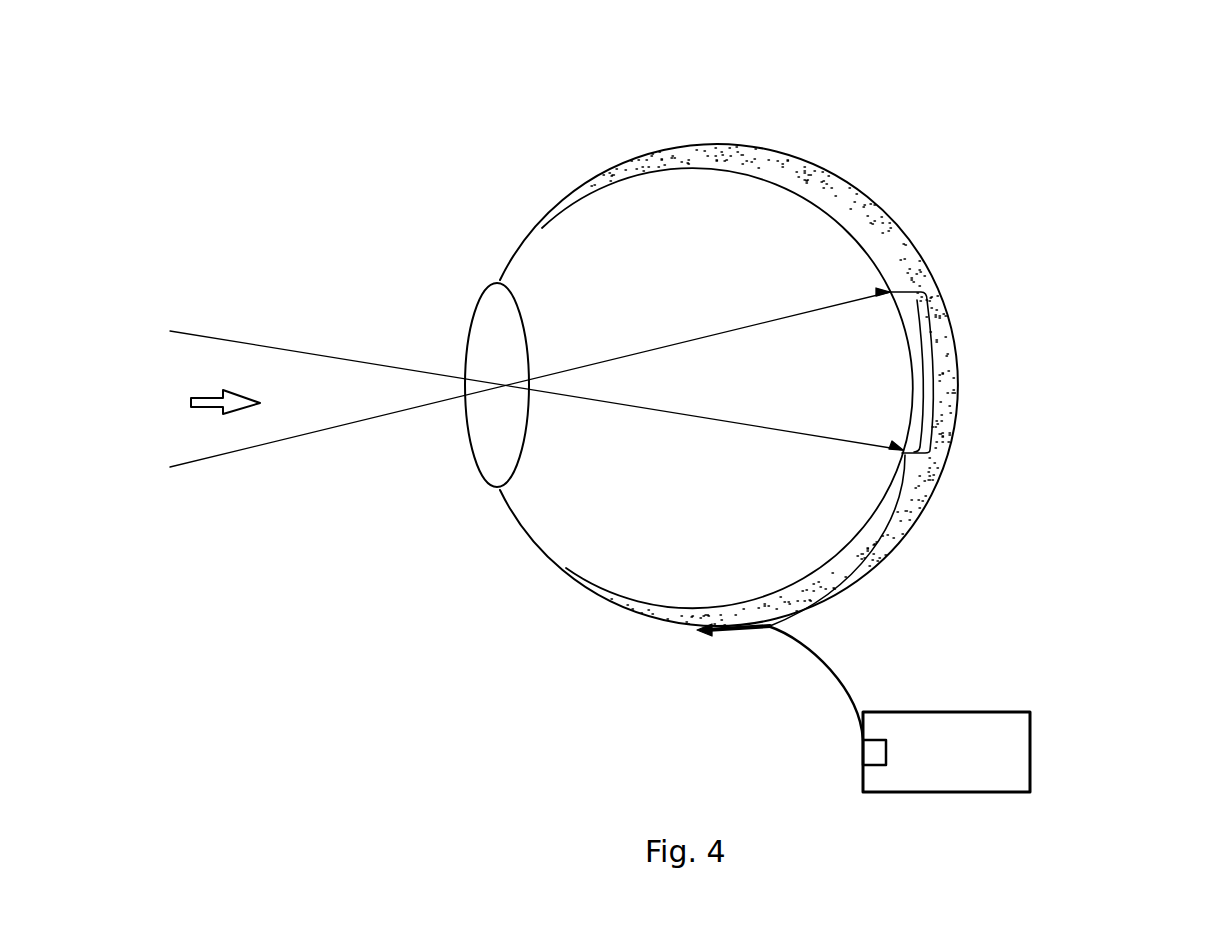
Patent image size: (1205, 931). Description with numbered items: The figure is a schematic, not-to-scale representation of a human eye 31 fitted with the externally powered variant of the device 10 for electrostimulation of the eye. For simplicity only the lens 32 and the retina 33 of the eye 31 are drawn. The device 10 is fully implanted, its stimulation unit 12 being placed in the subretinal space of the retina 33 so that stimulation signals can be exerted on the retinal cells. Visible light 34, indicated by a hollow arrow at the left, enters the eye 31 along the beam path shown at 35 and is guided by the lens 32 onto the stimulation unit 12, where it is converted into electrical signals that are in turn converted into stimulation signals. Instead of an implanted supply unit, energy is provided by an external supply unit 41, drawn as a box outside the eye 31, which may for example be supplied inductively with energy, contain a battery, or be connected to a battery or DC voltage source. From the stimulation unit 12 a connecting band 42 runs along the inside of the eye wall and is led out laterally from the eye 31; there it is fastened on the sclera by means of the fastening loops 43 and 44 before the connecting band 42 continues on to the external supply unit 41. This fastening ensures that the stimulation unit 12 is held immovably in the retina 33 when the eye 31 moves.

The device 10 is at (947, 516).
The stimulation unit 12 is at (932, 333).
The human eye 31 is at (566, 160).
The lens 32 is at (500, 442).
The retina 33 is at (893, 224).
The visible light 34 is at (208, 410).
The beam path 35 is at (307, 433).
The external supply unit 41 is at (993, 752).
The connecting band 42 is at (900, 515).
The fastening loop 43 is at (718, 640).
The fastening loop 44 is at (762, 635).